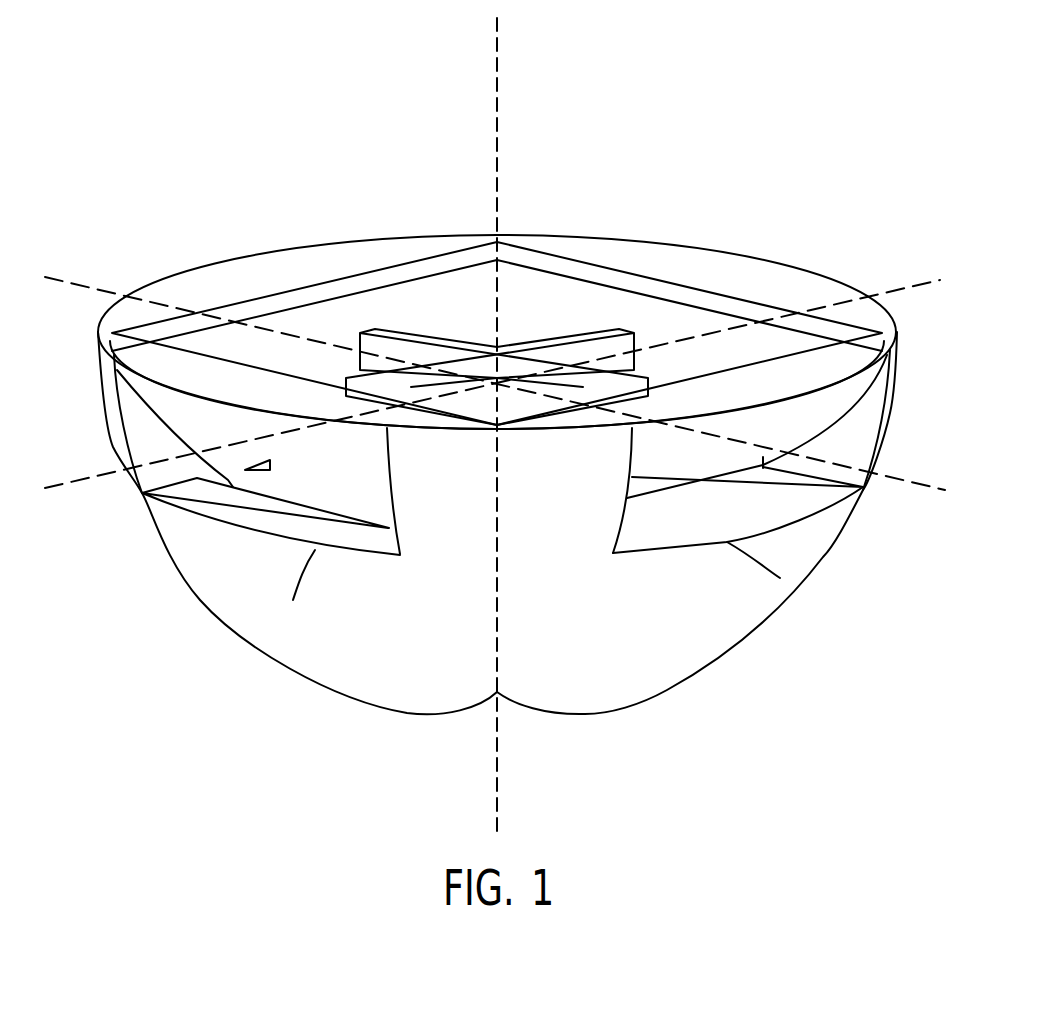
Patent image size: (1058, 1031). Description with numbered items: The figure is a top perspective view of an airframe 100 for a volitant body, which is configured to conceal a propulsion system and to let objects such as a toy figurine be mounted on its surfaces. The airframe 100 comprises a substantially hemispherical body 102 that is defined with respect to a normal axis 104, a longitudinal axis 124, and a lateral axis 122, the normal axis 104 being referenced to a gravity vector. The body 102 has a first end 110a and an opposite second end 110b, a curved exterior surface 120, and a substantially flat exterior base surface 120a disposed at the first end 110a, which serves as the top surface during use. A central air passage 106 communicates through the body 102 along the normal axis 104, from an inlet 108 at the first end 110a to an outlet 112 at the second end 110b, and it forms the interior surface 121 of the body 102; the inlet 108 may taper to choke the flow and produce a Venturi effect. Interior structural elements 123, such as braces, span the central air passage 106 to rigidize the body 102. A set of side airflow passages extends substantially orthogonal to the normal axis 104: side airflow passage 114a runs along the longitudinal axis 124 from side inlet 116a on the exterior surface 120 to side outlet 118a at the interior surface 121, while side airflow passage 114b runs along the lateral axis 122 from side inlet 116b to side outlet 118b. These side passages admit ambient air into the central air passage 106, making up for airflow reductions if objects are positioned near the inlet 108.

The airframe 100 is at (709, 150).
The body 102 is at (898, 333).
The normal axis 104 is at (495, 64).
The central air passage 106 is at (430, 275).
The inlet 108 is at (712, 300).
The first end 110a is at (605, 243).
The second end 110b is at (420, 716).
The outlet 112 is at (487, 705).
The side airflow passage 114a is at (233, 508).
The side airflow passage 114b is at (800, 521).
The side inlet 116a is at (293, 600).
The side inlet 116b is at (780, 578).
The side outlet 118a is at (232, 487).
The side outlet 118b is at (848, 513).
The exterior surface 120 is at (608, 636).
The exterior base surface 120a is at (328, 276).
The interior surface 121 is at (402, 322).
The lateral axis 122 is at (941, 484).
The interior structural elements 123 is at (541, 345).
The longitudinal axis 124 is at (939, 281).